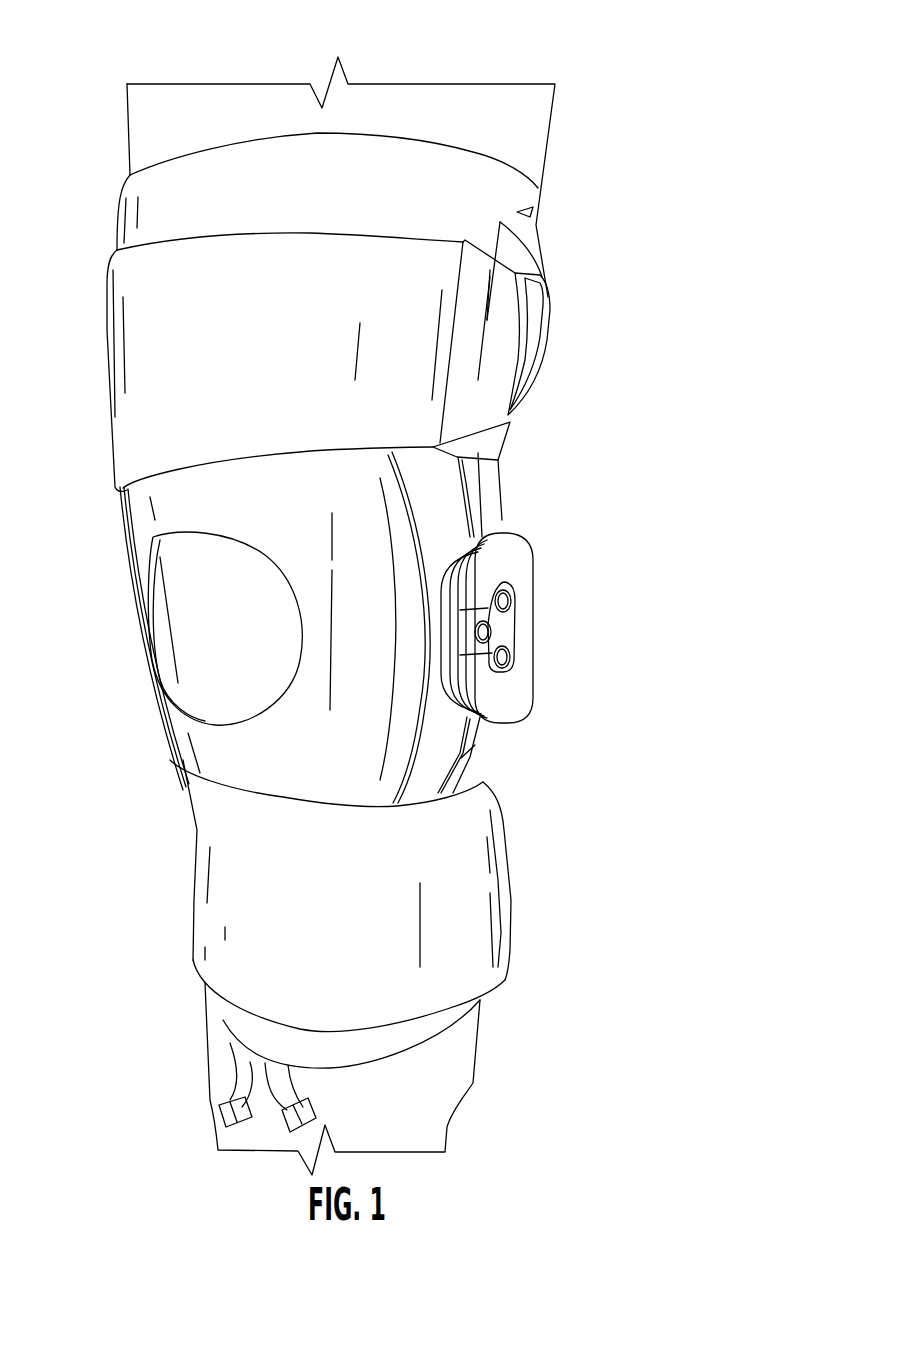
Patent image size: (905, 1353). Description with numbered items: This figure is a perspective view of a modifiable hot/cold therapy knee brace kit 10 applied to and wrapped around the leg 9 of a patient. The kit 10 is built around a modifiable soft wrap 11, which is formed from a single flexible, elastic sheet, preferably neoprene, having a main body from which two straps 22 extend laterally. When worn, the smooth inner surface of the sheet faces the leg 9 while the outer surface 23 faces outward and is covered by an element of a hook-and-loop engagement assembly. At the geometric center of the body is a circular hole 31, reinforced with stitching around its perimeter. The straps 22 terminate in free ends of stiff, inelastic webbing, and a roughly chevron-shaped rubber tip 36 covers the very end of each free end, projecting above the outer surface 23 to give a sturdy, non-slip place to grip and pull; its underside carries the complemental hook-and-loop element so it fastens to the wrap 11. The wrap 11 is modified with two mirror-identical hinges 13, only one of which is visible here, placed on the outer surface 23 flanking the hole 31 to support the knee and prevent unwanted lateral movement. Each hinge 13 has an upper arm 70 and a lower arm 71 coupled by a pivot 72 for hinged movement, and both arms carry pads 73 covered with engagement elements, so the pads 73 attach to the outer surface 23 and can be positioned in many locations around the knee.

The leg 9 is at (550, 107).
The kit 10 is at (687, 140).
The modifiable soft wrap 11 is at (517, 212).
The hinge 13 is at (523, 548).
The strap 22 is at (137, 365).
The outer surface 23 is at (484, 222).
The circular hole 31 is at (213, 647).
The rubber tip 36 is at (552, 347).
The upper arm 70 is at (495, 497).
The lower arm 71 is at (483, 753).
The pivot 72 is at (523, 632).
The pad 73 is at (505, 437).